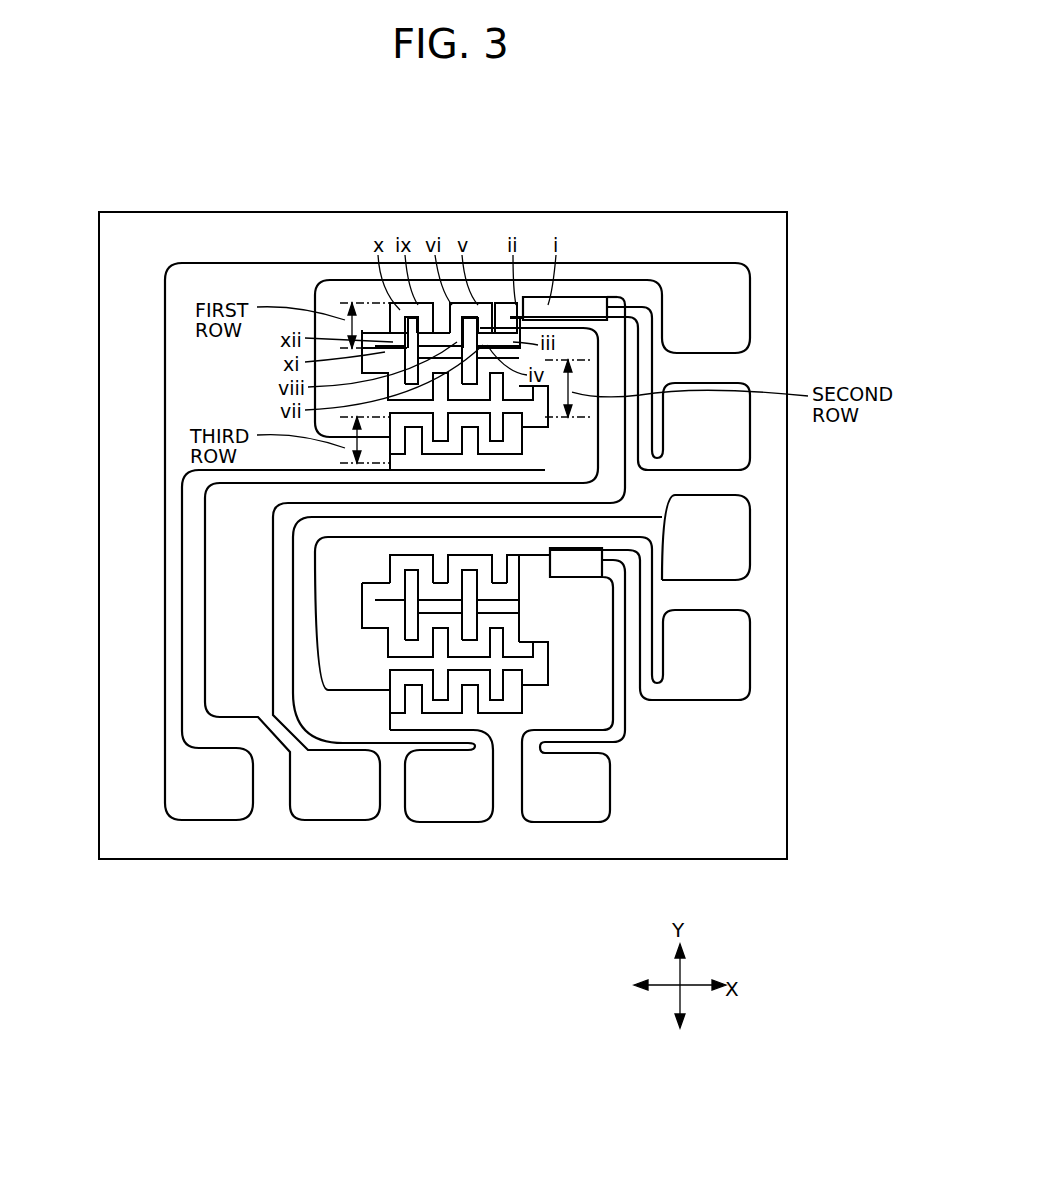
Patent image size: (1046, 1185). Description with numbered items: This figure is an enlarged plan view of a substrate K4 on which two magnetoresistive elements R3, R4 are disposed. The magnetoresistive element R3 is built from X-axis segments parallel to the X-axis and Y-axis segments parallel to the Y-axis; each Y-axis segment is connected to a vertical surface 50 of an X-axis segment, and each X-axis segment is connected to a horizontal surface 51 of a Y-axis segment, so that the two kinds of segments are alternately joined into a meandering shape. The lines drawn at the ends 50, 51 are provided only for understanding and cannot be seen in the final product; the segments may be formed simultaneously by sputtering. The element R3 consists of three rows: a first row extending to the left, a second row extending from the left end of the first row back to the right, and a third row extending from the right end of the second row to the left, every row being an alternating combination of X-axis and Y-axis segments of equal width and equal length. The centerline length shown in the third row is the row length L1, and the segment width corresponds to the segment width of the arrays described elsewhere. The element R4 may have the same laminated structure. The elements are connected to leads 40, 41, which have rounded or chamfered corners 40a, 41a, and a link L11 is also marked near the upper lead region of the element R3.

The substrate K4 is at (225, 237).
The lead 40 is at (305, 283).
The rounded or chamfered corner 40a is at (318, 553).
The lead 41 is at (572, 568).
The rounded or chamfered corner 41a is at (612, 598).
The vertical surface 50 is at (531, 300).
The horizontal surface 51 is at (548, 318).
The row length L1 is at (497, 455).
The link L11 is at (577, 300).
The magnetoresistive element R3 is at (499, 303).
The magnetoresistive element R4 is at (378, 664).